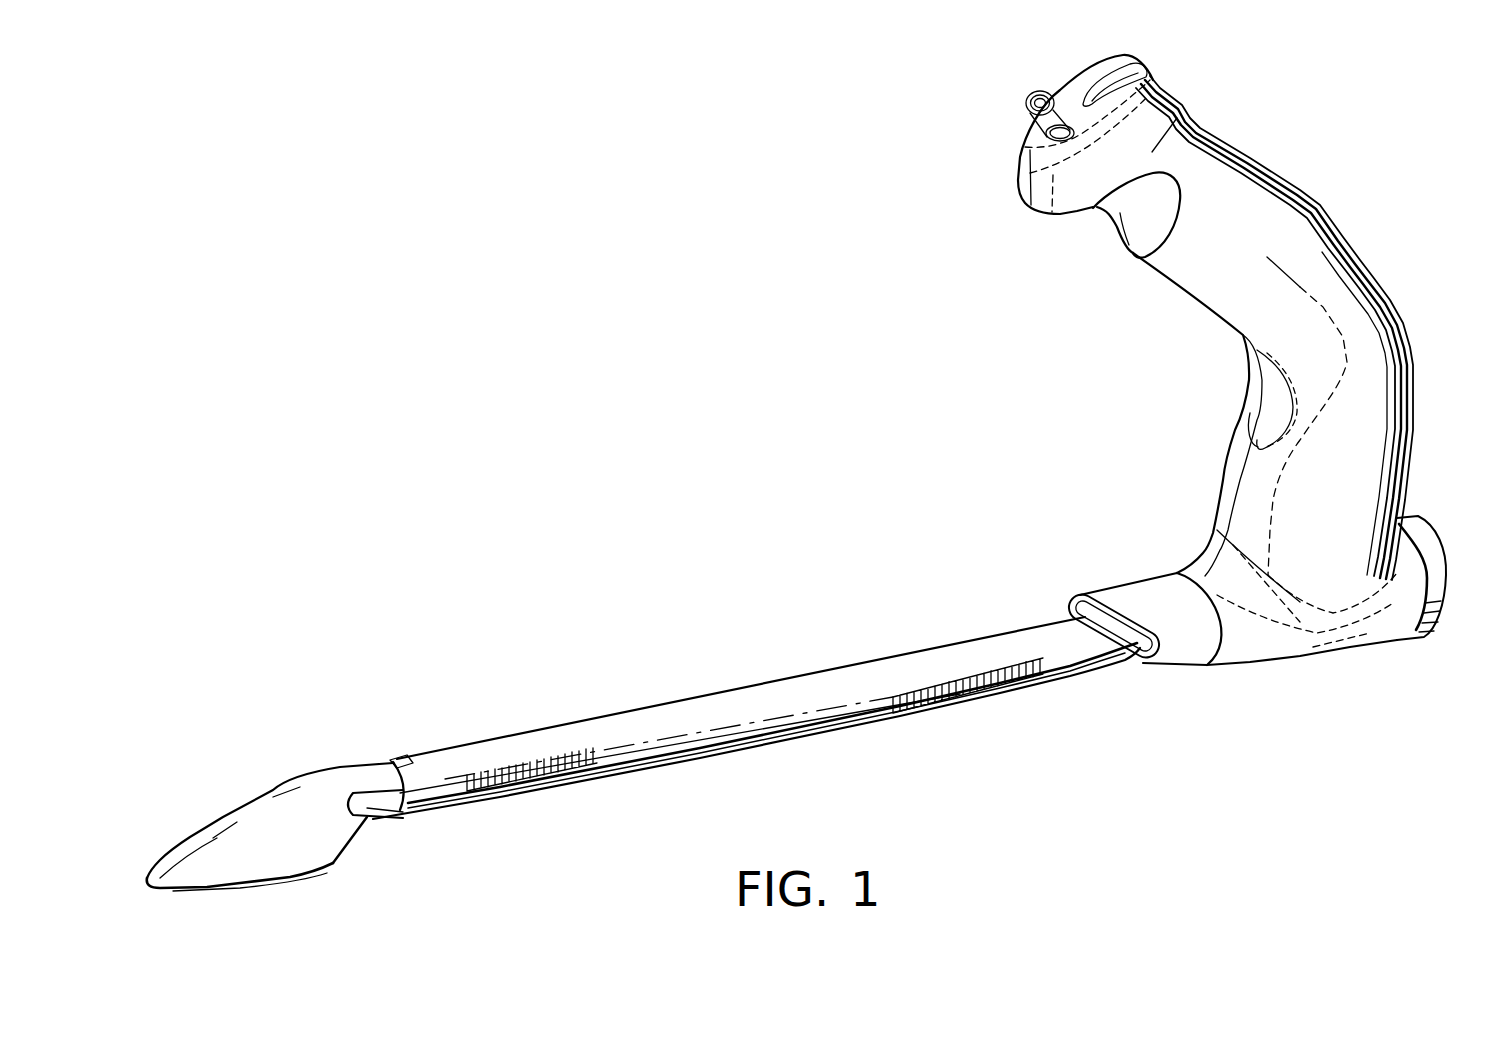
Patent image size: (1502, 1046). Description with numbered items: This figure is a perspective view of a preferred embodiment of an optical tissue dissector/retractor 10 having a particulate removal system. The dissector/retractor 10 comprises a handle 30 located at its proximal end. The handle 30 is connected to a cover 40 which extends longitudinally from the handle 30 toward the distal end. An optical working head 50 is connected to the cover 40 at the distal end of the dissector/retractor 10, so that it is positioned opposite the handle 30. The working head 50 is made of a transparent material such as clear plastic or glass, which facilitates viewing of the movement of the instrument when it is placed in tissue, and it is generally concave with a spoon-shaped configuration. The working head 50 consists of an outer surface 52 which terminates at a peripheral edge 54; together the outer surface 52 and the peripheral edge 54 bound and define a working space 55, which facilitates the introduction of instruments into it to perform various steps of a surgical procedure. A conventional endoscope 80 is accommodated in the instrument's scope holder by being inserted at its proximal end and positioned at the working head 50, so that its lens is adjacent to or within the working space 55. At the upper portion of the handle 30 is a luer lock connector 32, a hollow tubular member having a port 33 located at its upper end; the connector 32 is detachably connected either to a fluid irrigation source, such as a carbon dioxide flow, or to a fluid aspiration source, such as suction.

The optical tissue dissector/retractor 10 is at (684, 492).
The handle 30 is at (1290, 232).
The luer lock connector 32 is at (1047, 128).
The port 33 is at (1034, 95).
The cover 40 is at (643, 718).
The optical working head 50 is at (320, 752).
The outer surface 52 is at (223, 818).
The peripheral edge 54 is at (203, 893).
The working space 55 is at (300, 847).
The endoscope 80 is at (1418, 535).